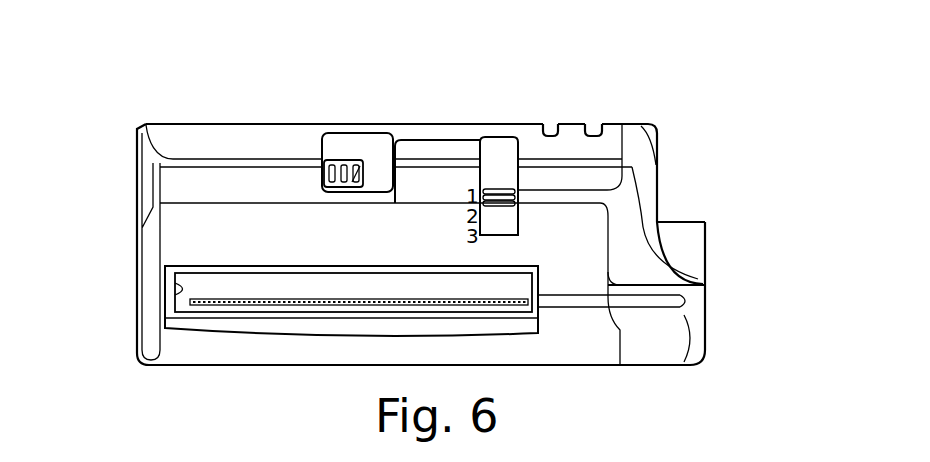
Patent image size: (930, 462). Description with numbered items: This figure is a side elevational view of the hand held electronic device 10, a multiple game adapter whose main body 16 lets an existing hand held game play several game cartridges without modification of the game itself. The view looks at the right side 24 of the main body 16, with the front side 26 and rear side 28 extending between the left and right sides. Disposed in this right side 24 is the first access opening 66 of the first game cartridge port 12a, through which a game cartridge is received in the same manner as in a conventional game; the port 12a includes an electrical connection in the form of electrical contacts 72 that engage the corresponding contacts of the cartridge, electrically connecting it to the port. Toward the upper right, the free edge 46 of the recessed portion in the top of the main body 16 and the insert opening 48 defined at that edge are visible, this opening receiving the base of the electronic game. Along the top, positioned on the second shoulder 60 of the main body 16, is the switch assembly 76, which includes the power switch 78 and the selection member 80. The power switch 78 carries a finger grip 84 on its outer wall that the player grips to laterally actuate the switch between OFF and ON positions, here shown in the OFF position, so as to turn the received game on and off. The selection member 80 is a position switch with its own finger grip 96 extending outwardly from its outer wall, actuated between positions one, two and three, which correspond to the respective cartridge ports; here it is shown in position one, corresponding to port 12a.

The hand held electronic device 10 is at (603, 96).
The first game cartridge port 12a is at (287, 270).
The main body 16 is at (650, 131).
The right side 24 is at (197, 203).
The front side 26 is at (137, 250).
The rear side 28 is at (705, 288).
The free edge 46 is at (705, 223).
The insert opening 48 is at (657, 216).
The second shoulder 60 is at (200, 140).
The first access opening 66 is at (185, 289).
The electrical contacts 72 is at (267, 294).
The switch assembly 76 is at (433, 136).
The power switch 78 is at (323, 178).
The selection member 80 is at (490, 190).
The finger grip 84 is at (363, 178).
The finger grip 96 is at (518, 197).